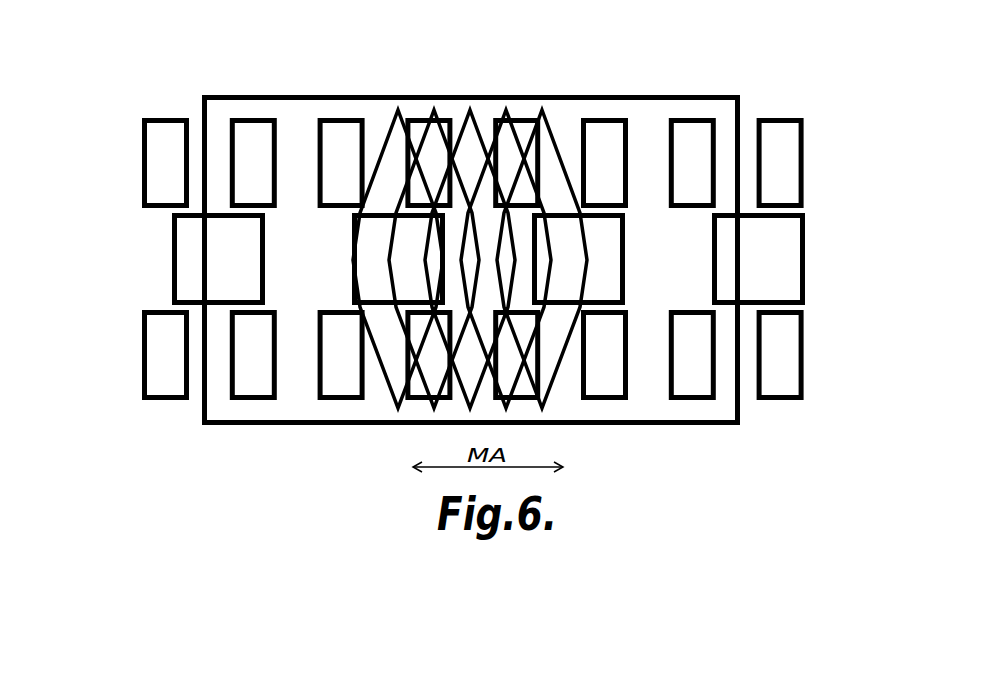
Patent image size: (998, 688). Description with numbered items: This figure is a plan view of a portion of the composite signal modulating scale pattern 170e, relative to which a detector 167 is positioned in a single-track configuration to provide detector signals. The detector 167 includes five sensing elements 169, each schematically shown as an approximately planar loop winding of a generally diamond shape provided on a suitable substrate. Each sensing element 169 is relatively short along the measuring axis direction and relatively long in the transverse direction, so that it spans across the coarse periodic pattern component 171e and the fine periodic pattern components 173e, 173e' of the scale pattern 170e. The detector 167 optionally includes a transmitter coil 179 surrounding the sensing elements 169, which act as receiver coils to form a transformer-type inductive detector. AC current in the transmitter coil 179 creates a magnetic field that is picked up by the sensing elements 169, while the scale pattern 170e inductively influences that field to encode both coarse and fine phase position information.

The detector 167 is at (681, 56).
The transmitter coil 179 is at (306, 94).
The sensing elements 169 is at (388, 135).
The signal modulating scale pattern 170e is at (897, 140).
The fine periodic pattern component 173e is at (515, 163).
The coarse periodic pattern component 171e is at (815, 255).
The fine periodic pattern component 173e' is at (519, 355).